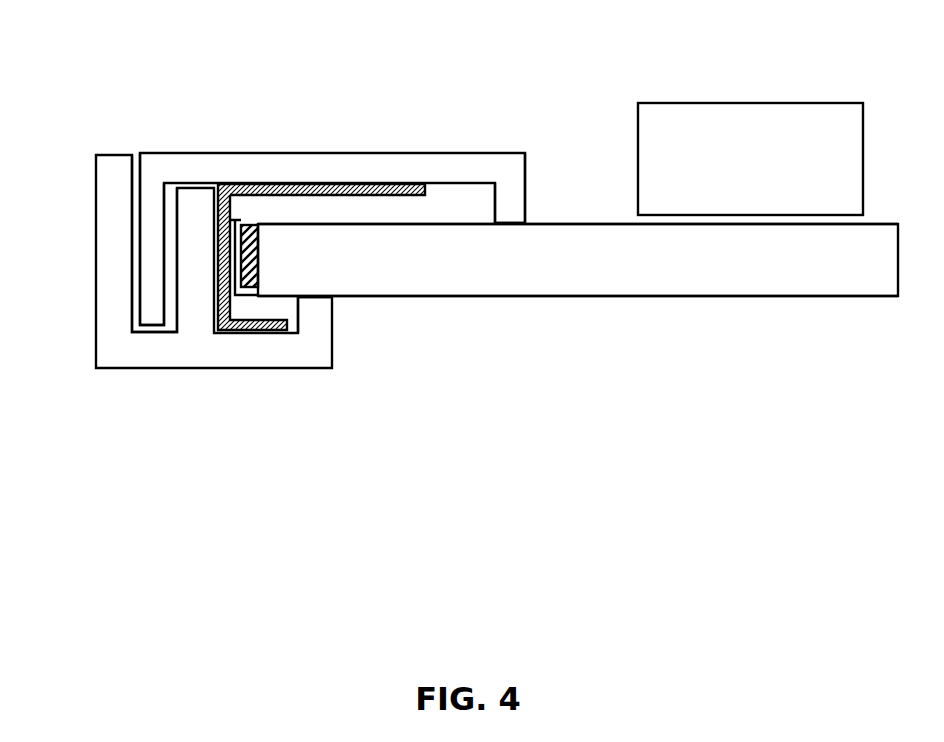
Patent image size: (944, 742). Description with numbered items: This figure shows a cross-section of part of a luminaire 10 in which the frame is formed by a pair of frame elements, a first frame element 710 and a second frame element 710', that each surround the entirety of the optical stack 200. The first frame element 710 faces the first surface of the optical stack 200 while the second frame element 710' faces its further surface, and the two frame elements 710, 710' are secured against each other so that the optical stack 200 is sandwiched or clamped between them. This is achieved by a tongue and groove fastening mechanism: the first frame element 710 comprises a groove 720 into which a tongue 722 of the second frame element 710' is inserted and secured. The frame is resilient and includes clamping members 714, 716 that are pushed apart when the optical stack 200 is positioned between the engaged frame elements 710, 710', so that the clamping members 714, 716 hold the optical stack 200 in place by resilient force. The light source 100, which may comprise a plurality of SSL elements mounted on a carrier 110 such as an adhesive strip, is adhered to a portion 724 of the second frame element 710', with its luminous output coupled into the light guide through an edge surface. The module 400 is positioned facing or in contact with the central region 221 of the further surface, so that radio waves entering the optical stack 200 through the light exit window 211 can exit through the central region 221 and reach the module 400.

The luminaire 10 is at (471, 583).
The light source 100 is at (262, 290).
The carrier 110 is at (238, 223).
The optical stack 200 is at (572, 285).
The light exit window 211 is at (750, 297).
The central region 221 is at (592, 225).
The module 400 is at (745, 130).
The first frame element 710 is at (214, 311).
The second frame element 710' is at (332, 192).
The clamping member 714 is at (510, 202).
The clamping member 716 is at (323, 310).
The groove 720 is at (170, 327).
The tongue 722 is at (150, 260).
The portion of the second frame element 724 is at (283, 183).